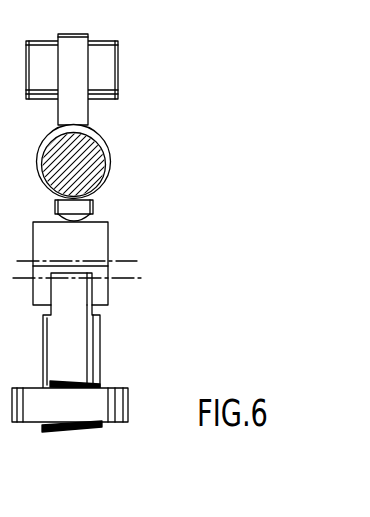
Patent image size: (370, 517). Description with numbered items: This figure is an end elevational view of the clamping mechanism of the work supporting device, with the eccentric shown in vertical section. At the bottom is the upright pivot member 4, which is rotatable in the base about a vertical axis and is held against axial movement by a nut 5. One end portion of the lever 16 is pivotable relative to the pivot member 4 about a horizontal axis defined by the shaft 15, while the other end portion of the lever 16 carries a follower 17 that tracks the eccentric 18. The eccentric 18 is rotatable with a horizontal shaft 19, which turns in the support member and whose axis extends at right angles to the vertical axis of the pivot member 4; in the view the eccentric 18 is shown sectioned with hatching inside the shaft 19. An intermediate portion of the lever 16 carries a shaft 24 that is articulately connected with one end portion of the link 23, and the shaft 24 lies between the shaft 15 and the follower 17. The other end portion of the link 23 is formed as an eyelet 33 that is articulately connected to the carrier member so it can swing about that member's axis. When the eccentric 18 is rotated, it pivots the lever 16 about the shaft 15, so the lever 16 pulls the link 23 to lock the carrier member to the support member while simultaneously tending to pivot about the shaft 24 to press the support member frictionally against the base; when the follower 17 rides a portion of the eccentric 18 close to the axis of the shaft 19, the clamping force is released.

The pivot member 4 is at (100, 428).
The nut 5 is at (128, 401).
The shaft 15 is at (138, 279).
The lever 16 is at (109, 296).
The follower 17 is at (95, 207).
The eccentric 18 is at (97, 178).
The shaft 19 is at (102, 137).
The link 23 is at (113, 80).
The shaft 24 is at (140, 261).
The eyelet 33 is at (82, 34).